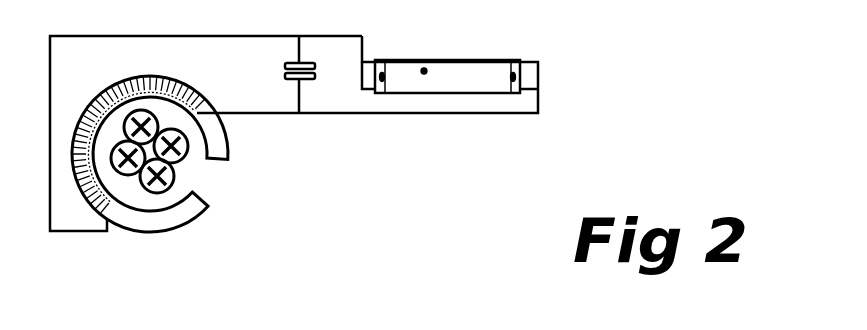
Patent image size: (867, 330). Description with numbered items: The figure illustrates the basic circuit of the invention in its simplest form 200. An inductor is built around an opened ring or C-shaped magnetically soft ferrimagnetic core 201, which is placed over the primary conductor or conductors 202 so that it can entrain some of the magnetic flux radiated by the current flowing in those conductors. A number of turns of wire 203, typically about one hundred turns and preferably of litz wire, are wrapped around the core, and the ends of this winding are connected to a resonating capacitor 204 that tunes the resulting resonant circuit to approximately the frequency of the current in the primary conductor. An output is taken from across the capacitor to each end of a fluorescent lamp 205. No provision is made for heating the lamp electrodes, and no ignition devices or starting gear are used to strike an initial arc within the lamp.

The basic circuit 200 is at (643, 190).
The magnetically soft ferrimagnetic core 201 is at (200, 225).
The primary conductor or conductors 202 is at (185, 163).
The turns of wire 203 is at (80, 207).
The resonating capacitor 204 is at (317, 82).
The fluorescent lamp 205 is at (498, 60).